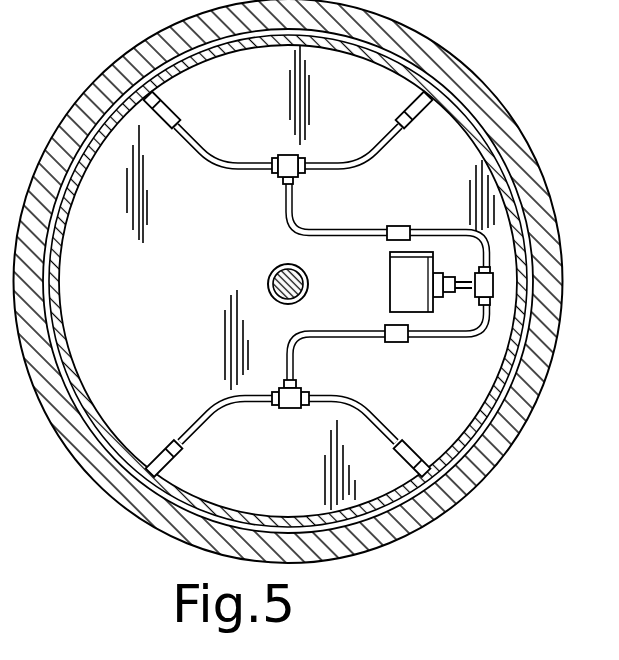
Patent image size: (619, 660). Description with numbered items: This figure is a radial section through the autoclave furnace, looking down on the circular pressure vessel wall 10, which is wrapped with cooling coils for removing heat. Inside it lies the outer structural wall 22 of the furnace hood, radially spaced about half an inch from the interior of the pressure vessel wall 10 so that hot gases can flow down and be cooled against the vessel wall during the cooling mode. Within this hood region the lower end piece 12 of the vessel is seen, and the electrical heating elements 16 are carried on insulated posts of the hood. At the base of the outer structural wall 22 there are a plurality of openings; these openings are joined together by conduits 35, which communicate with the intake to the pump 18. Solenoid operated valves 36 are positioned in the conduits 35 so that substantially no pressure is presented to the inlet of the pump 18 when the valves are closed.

The pressure vessel wall 10 is at (436, 49).
The outer structural wall 22 is at (468, 116).
The lower end piece 12 is at (182, 312).
The electrical heating elements 16 is at (398, 227).
The pump 18 is at (392, 284).
The conduits 35 is at (268, 170).
The solenoid operated valves 36 is at (400, 343).